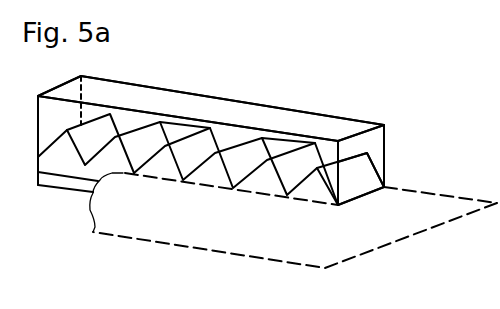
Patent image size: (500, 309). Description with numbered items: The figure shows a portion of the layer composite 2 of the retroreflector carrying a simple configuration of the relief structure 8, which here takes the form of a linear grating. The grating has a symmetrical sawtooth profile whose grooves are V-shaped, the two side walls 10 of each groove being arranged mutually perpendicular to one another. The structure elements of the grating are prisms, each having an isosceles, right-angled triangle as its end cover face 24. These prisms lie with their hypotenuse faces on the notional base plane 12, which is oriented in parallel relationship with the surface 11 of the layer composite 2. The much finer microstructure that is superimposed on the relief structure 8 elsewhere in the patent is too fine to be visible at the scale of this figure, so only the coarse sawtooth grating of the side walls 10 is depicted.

The layer composite 2 is at (350, 120).
The relief structure 8 is at (275, 143).
The side walls 10 is at (362, 172).
The surface 11 is at (133, 97).
The notional base plane 12 is at (324, 250).
The end cover face 24 is at (320, 183).